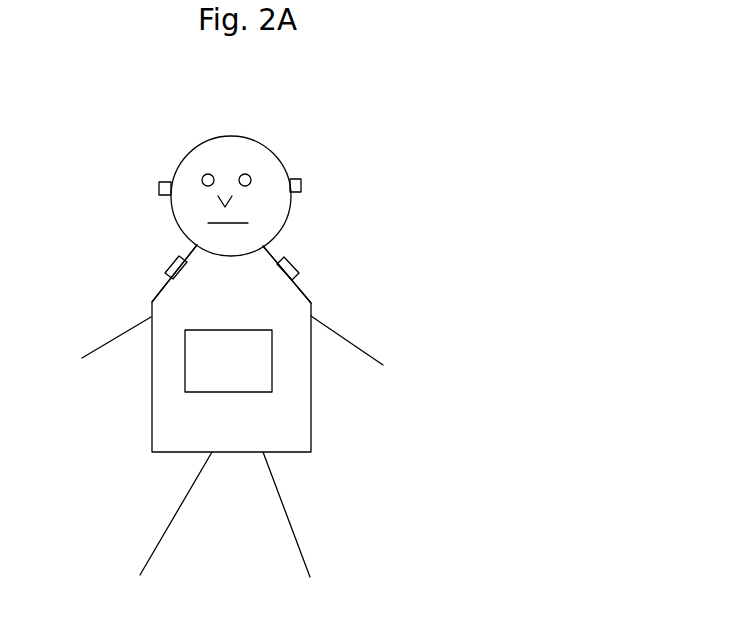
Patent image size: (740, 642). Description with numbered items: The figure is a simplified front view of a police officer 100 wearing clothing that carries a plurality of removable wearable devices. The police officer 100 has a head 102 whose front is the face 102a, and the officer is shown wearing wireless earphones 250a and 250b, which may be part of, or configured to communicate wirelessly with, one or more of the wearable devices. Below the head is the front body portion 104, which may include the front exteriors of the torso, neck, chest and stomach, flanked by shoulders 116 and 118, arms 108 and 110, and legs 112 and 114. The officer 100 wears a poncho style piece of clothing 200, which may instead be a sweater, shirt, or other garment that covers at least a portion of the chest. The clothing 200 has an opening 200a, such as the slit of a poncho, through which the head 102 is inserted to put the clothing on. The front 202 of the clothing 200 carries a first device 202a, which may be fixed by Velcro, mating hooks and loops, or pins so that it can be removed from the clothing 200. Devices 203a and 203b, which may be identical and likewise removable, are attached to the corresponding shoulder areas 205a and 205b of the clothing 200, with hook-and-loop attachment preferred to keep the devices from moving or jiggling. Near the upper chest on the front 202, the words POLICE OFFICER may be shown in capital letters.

The police officer 100 is at (331, 167).
The head 102 is at (210, 155).
The face 102a is at (182, 208).
The wireless earphone 250a is at (159, 182).
The wireless earphone 250b is at (296, 179).
The clothing 200 is at (281, 241).
The opening 200a is at (222, 257).
The front body portion 104 is at (163, 307).
The shoulder 116 is at (153, 293).
The shoulder 118 is at (303, 288).
The device 203a is at (163, 270).
The device 203b is at (292, 265).
The shoulder area 205a is at (160, 288).
The shoulder area 205b is at (300, 283).
The front 202 is at (295, 348).
The first device 202a is at (257, 342).
The arm 108 is at (108, 345).
The arm 110 is at (363, 342).
The leg 112 is at (165, 532).
The leg 114 is at (302, 535).